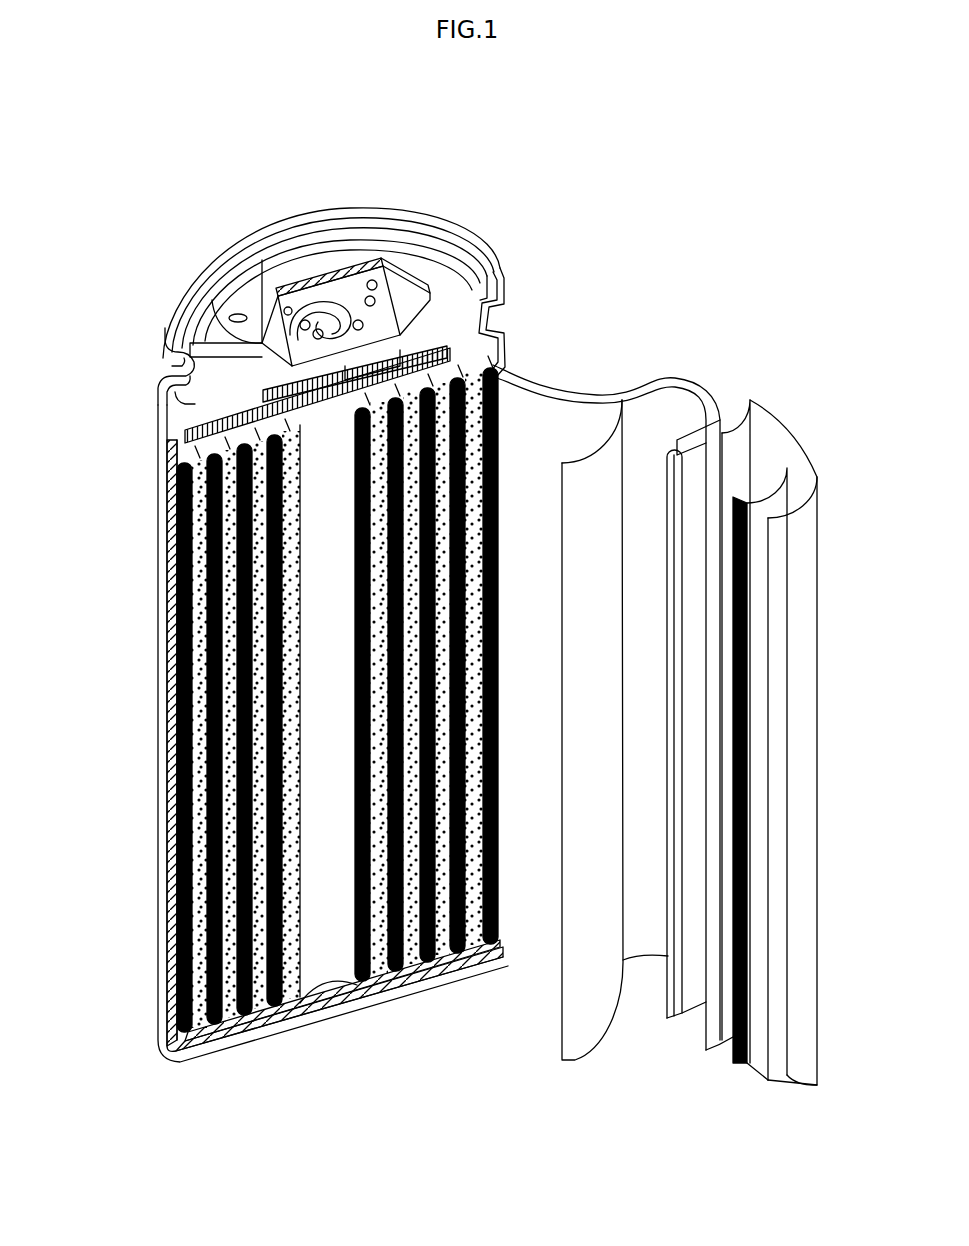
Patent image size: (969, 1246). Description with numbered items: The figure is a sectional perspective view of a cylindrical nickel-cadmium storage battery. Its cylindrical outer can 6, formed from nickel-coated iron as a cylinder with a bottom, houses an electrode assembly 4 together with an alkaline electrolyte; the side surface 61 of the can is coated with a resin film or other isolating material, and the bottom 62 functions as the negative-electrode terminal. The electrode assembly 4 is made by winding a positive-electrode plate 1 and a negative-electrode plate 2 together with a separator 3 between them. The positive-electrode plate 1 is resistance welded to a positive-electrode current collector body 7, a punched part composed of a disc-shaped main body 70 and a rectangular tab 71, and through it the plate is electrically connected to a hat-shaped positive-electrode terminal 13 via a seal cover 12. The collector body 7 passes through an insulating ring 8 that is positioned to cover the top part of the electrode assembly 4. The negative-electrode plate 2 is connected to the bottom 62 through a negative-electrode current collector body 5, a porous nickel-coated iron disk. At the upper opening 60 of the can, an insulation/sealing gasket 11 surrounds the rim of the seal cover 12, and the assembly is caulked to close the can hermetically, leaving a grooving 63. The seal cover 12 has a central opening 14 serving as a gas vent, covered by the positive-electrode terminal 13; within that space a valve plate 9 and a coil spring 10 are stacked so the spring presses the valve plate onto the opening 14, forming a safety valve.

The positive-electrode plate 1 is at (663, 412).
The negative-electrode plate 2 is at (763, 423).
The separator 3 is at (805, 462).
The electrode assembly 4 is at (700, 302).
The negative-electrode current collector body 5 is at (437, 993).
The cylindrical outer can 6 is at (126, 440).
The positive-electrode current collector body 7 is at (480, 367).
The insulating ring 8 is at (158, 420).
The valve plate 9 is at (240, 310).
The coil spring 10 is at (262, 300).
The insulation/sealing gasket 11 is at (492, 283).
The seal cover 12 is at (428, 277).
The positive-electrode terminal 13 is at (298, 265).
The opening 14 is at (287, 333).
The opening 60 is at (418, 245).
The side surface 61 is at (173, 588).
The bottom 62 is at (383, 1013).
The grooving 63 is at (495, 327).
The disc-shaped main body 70 is at (313, 400).
The rectangular tab 71 is at (350, 370).